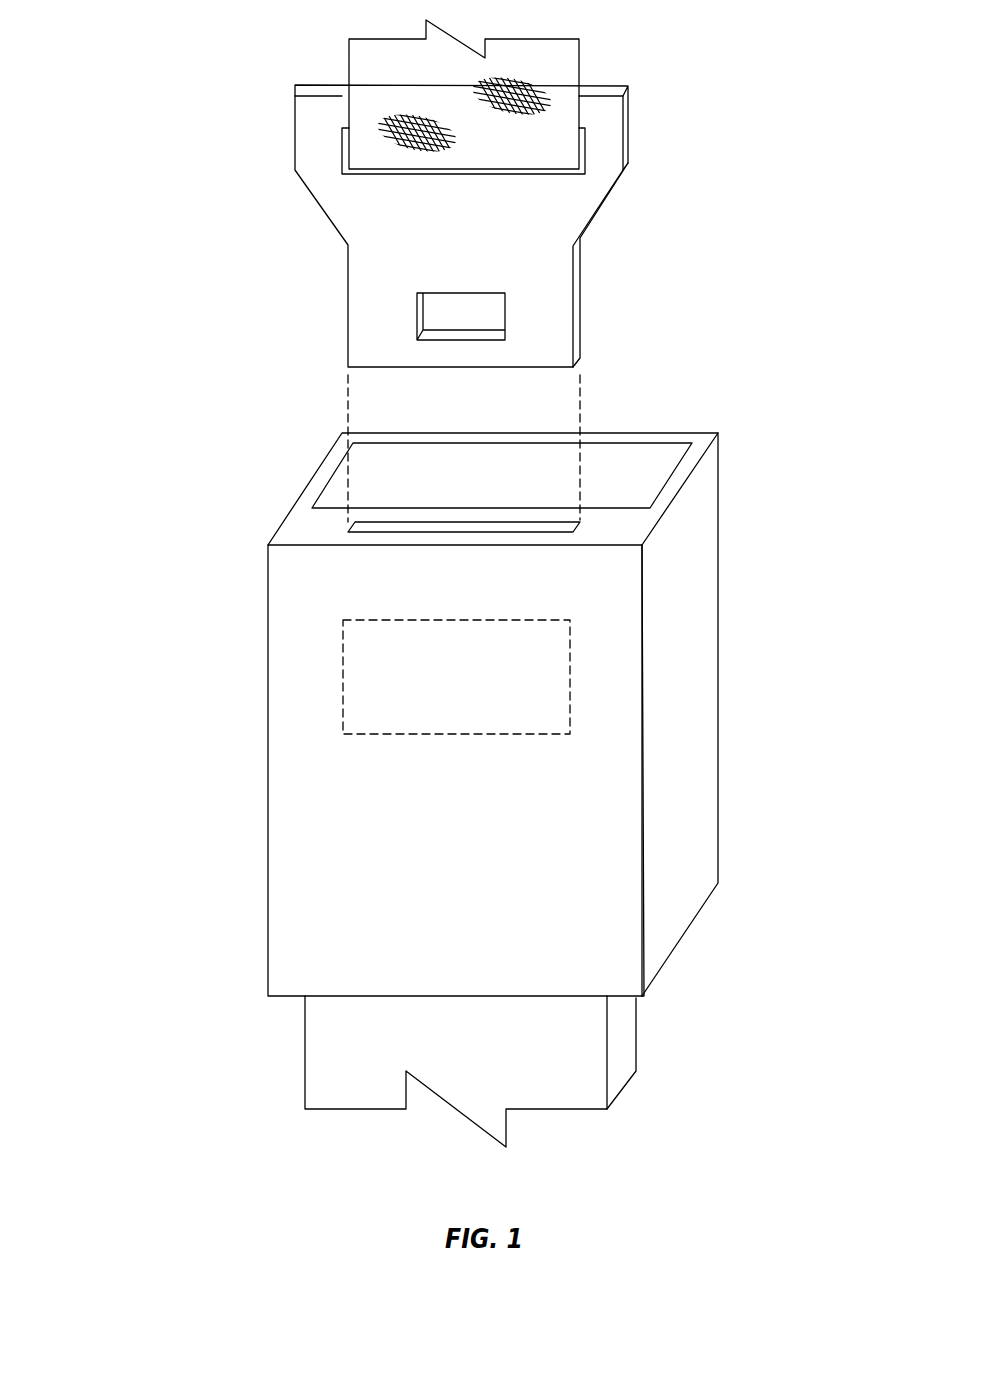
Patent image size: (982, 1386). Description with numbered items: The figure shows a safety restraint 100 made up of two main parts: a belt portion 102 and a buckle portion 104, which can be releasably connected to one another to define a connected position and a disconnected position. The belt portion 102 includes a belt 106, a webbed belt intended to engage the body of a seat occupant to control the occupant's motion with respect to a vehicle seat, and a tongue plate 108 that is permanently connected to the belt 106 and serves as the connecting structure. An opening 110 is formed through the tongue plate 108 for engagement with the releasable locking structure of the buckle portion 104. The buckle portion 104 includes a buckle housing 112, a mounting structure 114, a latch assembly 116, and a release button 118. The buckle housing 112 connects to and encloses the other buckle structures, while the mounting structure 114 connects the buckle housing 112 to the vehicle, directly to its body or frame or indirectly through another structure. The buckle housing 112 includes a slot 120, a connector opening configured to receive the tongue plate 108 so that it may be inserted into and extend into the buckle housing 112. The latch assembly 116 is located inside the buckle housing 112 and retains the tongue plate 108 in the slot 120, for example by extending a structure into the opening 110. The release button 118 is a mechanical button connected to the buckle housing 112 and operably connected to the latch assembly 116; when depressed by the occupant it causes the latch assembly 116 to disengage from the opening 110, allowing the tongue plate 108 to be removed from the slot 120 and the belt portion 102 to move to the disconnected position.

The safety restraint 100 is at (126, 102).
The belt portion 102 is at (249, 102).
The buckle portion 104 is at (738, 458).
The belt 106 is at (571, 63).
The tongue plate 108 is at (548, 265).
The opening 110 is at (417, 322).
The buckle housing 112 is at (699, 639).
The mounting structure 114 is at (305, 1054).
The latch assembly 116 is at (343, 653).
The release button 118 is at (362, 462).
The slot 120 is at (343, 530).